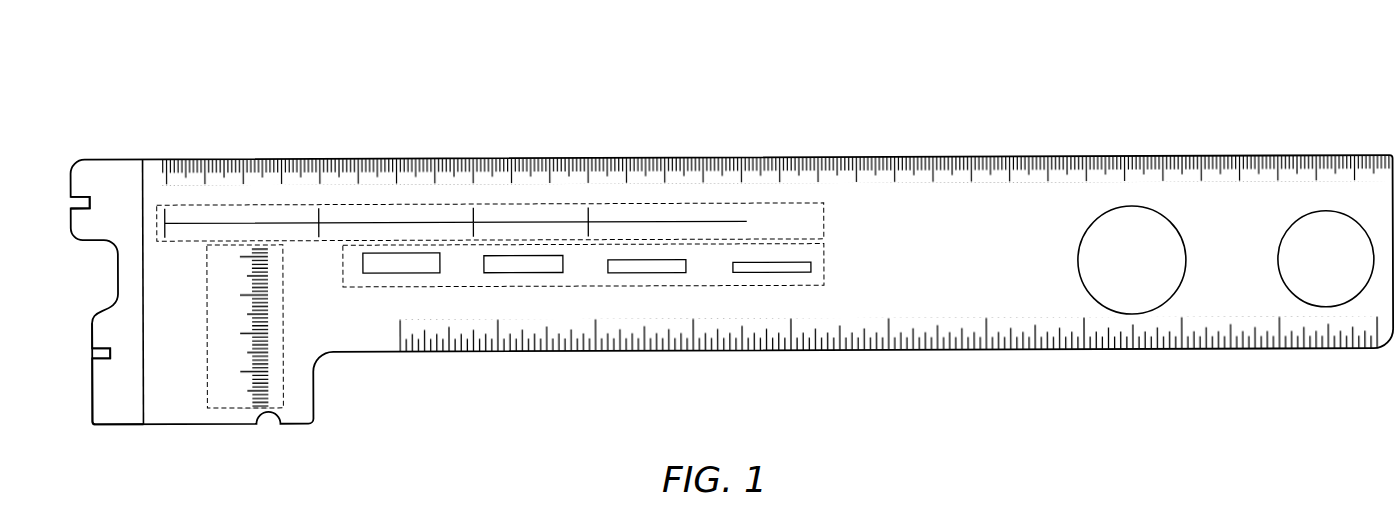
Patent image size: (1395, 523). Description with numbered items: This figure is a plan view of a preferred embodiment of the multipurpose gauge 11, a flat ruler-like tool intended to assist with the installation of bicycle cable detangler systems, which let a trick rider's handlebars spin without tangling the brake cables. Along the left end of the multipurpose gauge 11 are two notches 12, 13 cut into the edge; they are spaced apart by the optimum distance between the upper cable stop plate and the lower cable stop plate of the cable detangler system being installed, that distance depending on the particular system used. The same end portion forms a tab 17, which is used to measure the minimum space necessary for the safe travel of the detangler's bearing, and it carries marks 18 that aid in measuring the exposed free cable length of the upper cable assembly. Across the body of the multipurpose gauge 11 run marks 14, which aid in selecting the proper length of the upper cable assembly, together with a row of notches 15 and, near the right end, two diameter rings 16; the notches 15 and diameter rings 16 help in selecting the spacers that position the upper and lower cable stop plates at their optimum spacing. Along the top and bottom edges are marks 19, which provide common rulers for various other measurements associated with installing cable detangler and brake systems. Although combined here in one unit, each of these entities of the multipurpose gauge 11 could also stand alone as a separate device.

The multipurpose gauge 11 is at (664, 122).
The notch 12 is at (68, 201).
The notch 13 is at (84, 350).
The marks 14 is at (300, 203).
The notches 15 is at (518, 287).
The diameter rings 16 is at (1147, 313).
The tab 17 is at (107, 405).
The marks 18 is at (218, 408).
The marks 19 is at (765, 157).